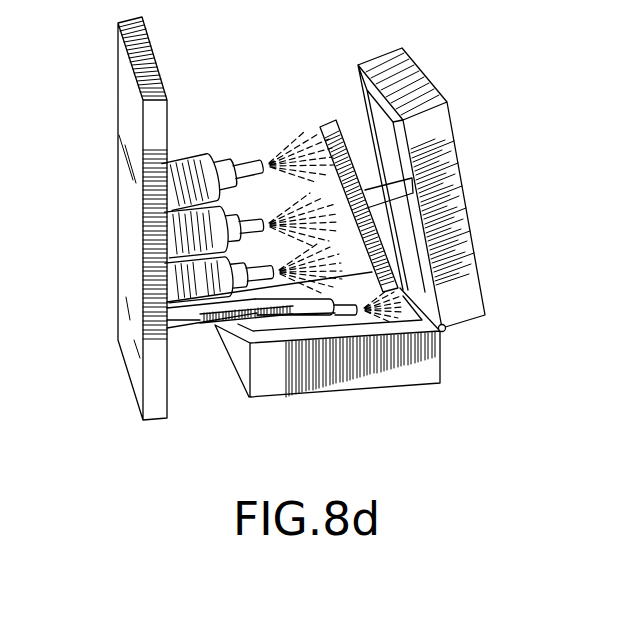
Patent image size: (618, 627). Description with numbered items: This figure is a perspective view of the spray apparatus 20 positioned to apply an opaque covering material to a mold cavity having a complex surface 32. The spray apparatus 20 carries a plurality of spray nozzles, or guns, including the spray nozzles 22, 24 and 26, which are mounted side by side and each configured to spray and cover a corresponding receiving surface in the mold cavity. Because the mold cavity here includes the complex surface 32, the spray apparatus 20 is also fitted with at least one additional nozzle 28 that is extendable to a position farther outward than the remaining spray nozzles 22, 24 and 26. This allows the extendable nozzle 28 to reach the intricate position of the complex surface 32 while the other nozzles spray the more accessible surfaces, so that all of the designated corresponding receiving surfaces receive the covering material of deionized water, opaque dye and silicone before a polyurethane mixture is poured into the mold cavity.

The spray apparatus 20 is at (117, 81).
The spray nozzle 22 is at (250, 213).
The spray nozzle 24 is at (239, 154).
The spray nozzle 26 is at (253, 278).
The extendable nozzle 28 is at (198, 318).
The mold cavity complex surface 32 is at (433, 82).